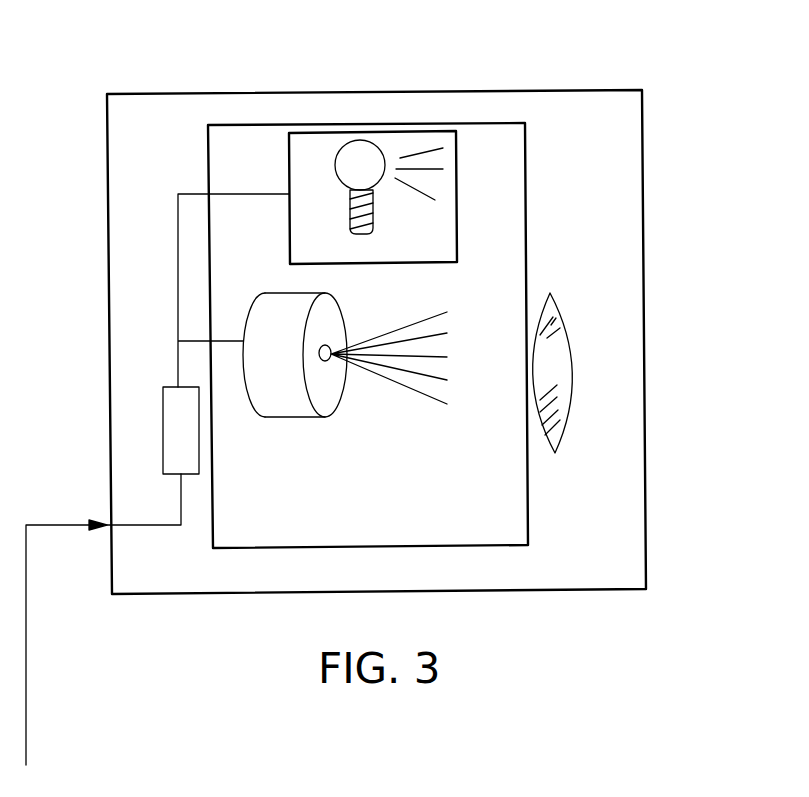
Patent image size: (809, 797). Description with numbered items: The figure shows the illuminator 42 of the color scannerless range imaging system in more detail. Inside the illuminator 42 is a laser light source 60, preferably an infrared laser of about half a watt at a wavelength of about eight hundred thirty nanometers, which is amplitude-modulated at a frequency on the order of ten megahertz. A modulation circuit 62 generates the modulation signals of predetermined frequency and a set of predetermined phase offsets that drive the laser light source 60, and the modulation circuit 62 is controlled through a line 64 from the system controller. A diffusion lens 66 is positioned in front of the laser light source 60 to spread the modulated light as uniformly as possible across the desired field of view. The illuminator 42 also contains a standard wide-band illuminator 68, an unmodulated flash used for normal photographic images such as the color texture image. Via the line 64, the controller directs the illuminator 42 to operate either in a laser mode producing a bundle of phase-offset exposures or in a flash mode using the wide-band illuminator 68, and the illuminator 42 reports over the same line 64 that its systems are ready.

The illuminator 42 is at (646, 433).
The laser light source 60 is at (307, 417).
The modulation circuit 62 is at (163, 428).
The line 64 is at (26, 687).
The diffusion lens 66 is at (570, 338).
The wide-band illuminator 68 is at (361, 140).